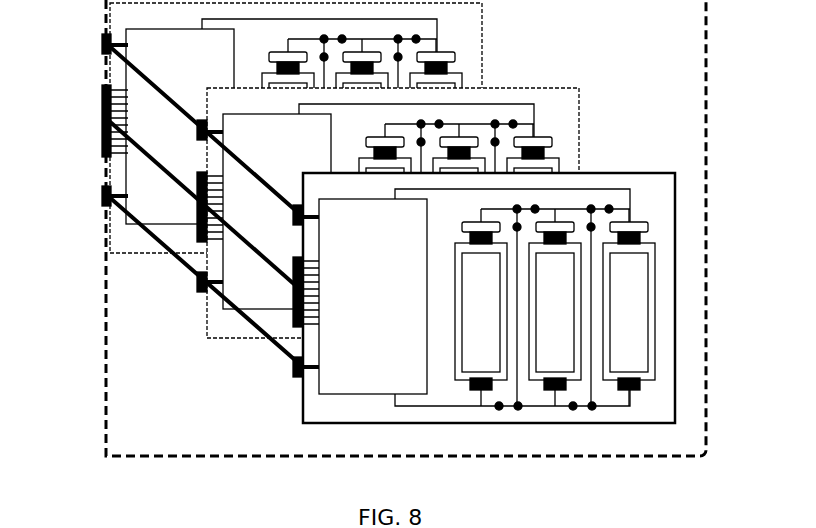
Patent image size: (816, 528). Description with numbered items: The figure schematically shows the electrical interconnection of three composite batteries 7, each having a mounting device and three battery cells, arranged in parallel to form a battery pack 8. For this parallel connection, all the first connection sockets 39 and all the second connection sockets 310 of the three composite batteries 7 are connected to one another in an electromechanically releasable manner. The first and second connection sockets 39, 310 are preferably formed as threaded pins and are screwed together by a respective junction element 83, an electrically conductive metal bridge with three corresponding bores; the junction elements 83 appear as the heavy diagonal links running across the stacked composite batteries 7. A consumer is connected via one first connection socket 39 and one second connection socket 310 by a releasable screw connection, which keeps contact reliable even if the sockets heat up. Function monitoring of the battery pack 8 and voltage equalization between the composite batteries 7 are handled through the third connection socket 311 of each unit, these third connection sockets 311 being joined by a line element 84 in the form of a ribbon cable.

The battery pack 8 is at (706, 41).
The composite battery 7 is at (665, 226).
The first connection socket 39 is at (104, 43).
The third connection socket 311 is at (102, 115).
The second connection socket 310 is at (104, 198).
The junction element 83 is at (148, 82).
The line element 84 is at (157, 168).